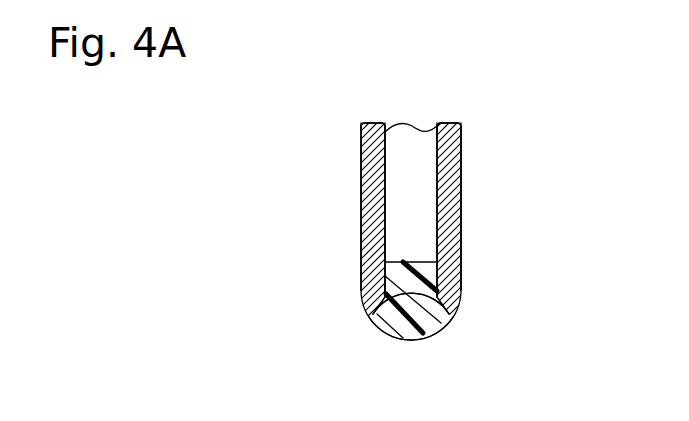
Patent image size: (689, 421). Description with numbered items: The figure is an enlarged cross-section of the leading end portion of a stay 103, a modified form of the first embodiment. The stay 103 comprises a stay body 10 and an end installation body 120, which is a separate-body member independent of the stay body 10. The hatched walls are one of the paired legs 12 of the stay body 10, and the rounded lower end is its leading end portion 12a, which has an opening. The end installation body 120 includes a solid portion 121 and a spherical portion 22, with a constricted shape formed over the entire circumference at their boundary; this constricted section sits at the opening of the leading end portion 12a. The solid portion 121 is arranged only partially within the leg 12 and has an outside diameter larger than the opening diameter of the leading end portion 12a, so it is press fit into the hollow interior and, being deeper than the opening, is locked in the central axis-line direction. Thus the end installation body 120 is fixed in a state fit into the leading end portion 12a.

The stay 103 is at (503, 128).
The stay body 10 is at (362, 212).
The leg 12 is at (372, 167).
The leading end portion 12a is at (378, 313).
The spherical portion 22 is at (408, 338).
The end installation body 120 is at (412, 318).
The solid portion 121 is at (407, 282).